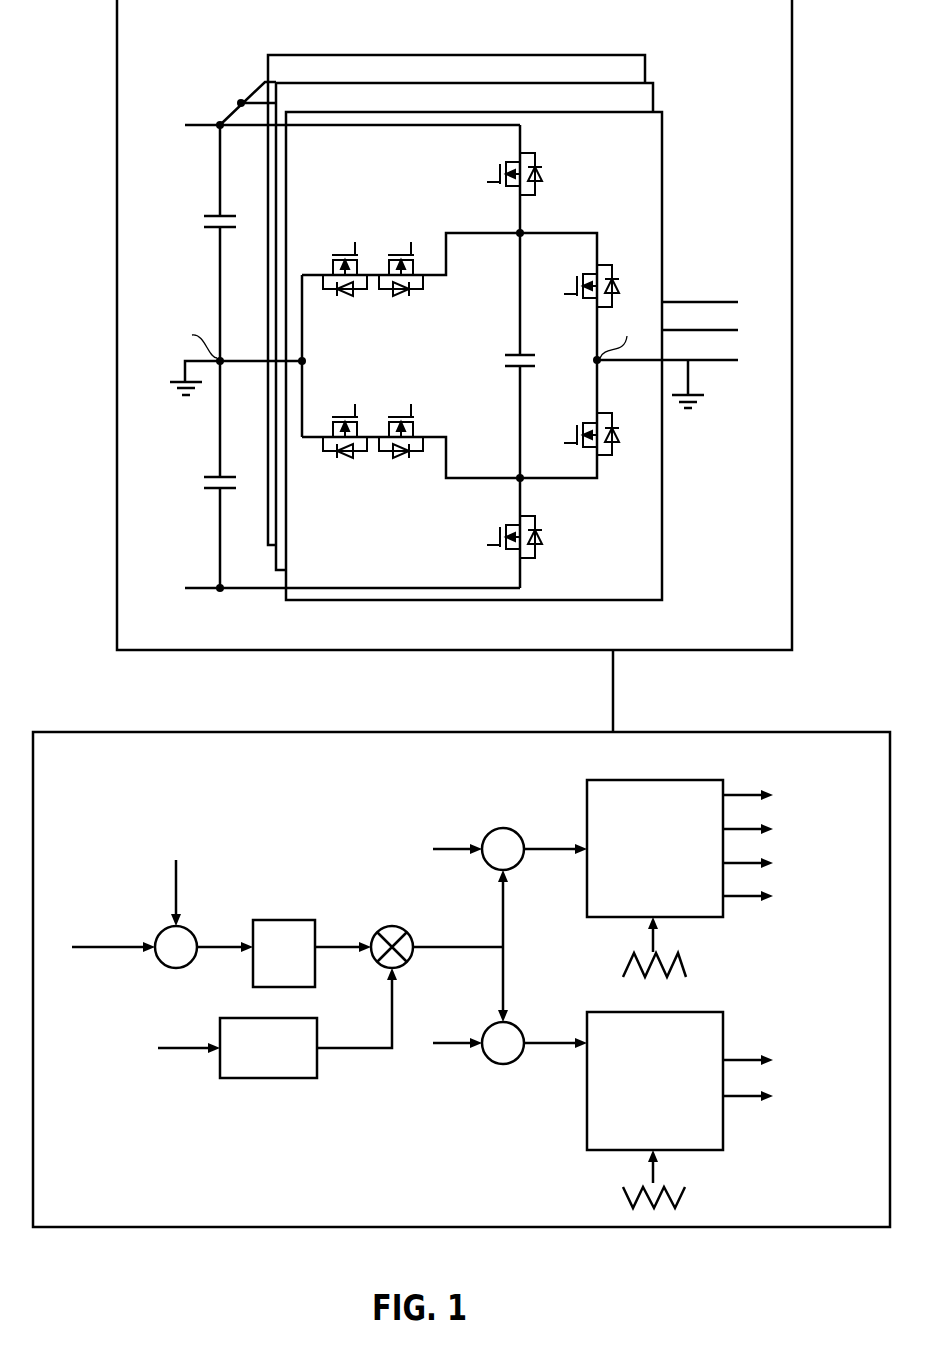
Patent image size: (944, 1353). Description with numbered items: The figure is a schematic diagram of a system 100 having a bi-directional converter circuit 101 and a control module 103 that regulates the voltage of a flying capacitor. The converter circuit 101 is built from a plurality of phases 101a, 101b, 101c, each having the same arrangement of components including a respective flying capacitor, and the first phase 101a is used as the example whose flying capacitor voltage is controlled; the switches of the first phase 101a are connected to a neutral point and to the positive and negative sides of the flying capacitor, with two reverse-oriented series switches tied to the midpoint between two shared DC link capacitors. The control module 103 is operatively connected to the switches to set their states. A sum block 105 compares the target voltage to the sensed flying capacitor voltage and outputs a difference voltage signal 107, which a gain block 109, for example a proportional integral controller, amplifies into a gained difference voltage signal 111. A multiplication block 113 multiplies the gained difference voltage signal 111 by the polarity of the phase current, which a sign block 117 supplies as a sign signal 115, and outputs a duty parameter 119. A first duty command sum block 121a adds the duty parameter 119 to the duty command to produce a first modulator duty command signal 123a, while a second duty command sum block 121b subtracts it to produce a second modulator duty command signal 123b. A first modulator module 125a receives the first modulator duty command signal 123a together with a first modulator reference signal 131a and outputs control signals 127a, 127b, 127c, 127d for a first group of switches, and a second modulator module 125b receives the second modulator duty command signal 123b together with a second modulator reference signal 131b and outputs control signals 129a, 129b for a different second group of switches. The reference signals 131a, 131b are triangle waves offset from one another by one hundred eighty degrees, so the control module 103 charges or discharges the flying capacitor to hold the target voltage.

The system 100 is at (68, 89).
The bi-directional converter circuit 101 is at (732, 43).
The first phase 101a is at (637, 187).
The second phase 101b is at (648, 97).
The third phase 101c is at (632, 72).
The control module 103 is at (82, 784).
The sum block 105 is at (158, 965).
The difference voltage signal 107 is at (218, 943).
The gain block 109 is at (290, 930).
The gained difference voltage signal 111 is at (332, 943).
The multiplication block 113 is at (392, 923).
The sign function output 115 is at (388, 1010).
The sign block 117 is at (270, 1078).
The duty parameter Δd 119 is at (465, 943).
The first duty command sum block 121a is at (502, 823).
The second duty command sum block 121b is at (503, 1064).
The first modulator duty command signal 123a is at (547, 847).
The second modulator duty command signal 123b is at (547, 1048).
The first modulator module 125a is at (712, 780).
The second modulator module 125b is at (703, 1150).
The control signal 127a is at (740, 795).
The control signal 127b is at (742, 829).
The control signal 127c is at (740, 866).
The control signal 127d is at (740, 897).
The control signal 129a is at (740, 1060).
The control signal 129b is at (740, 1097).
The first modulator reference signal 131a is at (660, 945).
The second modulator reference signal 131b is at (652, 1173).